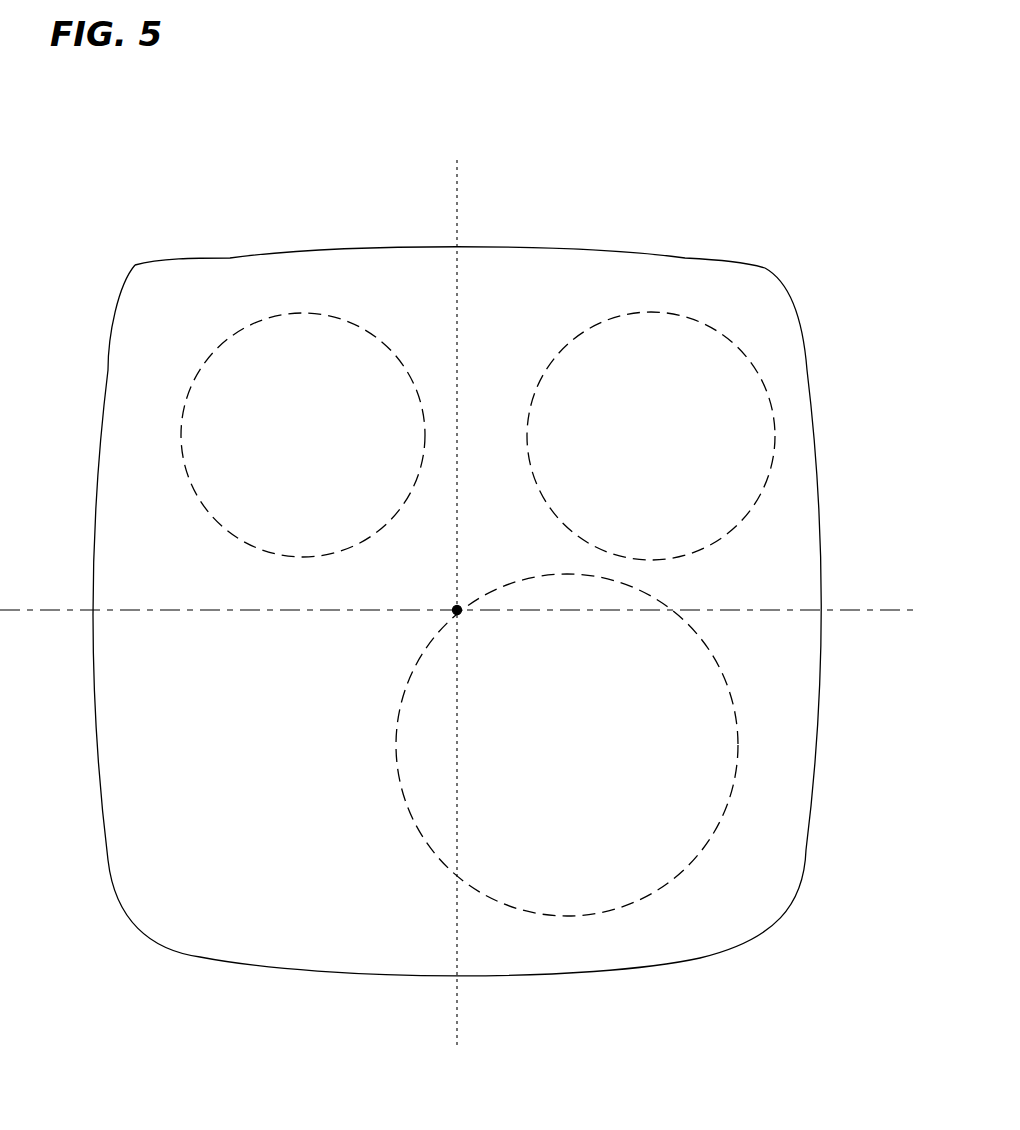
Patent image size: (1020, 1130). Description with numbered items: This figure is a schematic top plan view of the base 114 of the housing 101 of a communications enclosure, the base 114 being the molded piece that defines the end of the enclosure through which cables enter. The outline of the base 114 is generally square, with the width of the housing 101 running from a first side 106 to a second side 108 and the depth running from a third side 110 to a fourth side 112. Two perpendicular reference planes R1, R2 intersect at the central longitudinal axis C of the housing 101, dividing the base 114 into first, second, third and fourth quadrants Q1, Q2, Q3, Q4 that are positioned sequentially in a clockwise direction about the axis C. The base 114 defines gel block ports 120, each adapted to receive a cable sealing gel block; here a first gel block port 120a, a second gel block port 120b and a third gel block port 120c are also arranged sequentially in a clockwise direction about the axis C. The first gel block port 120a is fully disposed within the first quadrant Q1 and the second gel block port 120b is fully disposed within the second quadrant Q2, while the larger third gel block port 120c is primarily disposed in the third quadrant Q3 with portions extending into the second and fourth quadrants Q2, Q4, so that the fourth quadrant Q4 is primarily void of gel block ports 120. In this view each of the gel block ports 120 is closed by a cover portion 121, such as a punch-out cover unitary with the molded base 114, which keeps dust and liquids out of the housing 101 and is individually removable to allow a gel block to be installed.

The housing 101 is at (471, 615).
The first side 106 is at (95, 498).
The second side 108 is at (820, 523).
The third side 110 is at (630, 968).
The fourth side 112 is at (384, 248).
The base 114 is at (272, 774).
The gel block ports 120 is at (524, 536).
The first gel block port 120a is at (248, 548).
The second gel block port 120b is at (705, 548).
The third gel block port 120c is at (427, 848).
The cover portions 121 is at (318, 446).
The central longitudinal axis C is at (455, 608).
The first reference plane R1 is at (40, 612).
The second reference plane R2 is at (457, 183).
The first quadrant Q1 is at (180, 336).
The second quadrant Q2 is at (772, 326).
The third quadrant Q3 is at (755, 918).
The fourth quadrant Q4 is at (209, 924).